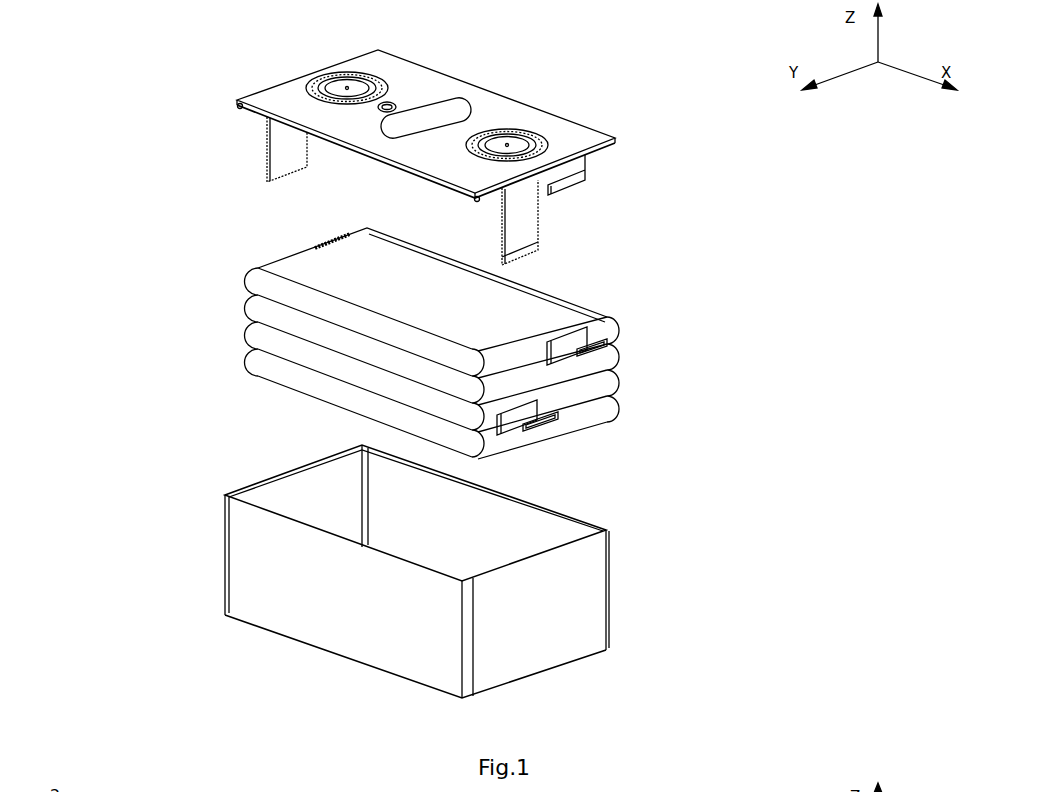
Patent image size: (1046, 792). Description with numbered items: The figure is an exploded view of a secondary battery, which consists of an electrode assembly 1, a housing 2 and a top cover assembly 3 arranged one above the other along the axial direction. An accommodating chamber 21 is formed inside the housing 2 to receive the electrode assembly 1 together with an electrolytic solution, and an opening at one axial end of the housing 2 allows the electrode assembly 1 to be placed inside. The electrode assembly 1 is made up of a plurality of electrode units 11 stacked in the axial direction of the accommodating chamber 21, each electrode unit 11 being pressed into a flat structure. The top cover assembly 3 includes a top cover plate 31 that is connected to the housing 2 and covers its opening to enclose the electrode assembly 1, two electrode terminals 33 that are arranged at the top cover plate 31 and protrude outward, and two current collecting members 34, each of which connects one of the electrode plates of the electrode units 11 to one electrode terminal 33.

The electrode assembly 1 is at (135, 237).
The electrode unit 11 is at (263, 280).
The housing 2 is at (580, 597).
The accommodating chamber 21 is at (562, 530).
The top cover assembly 3 is at (210, 41).
The top cover plate 31 is at (465, 98).
The electrode terminal 33 is at (342, 80).
The current collecting member 34 is at (287, 153).